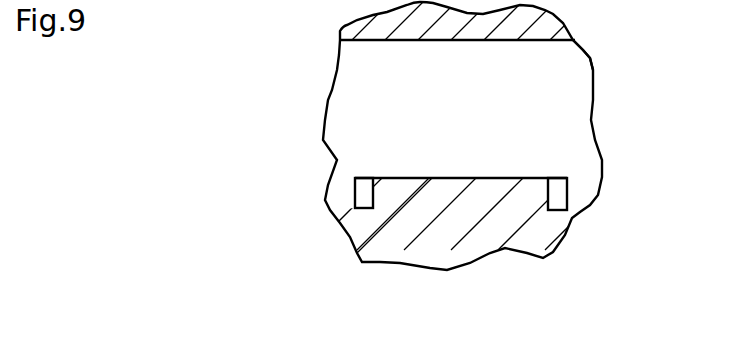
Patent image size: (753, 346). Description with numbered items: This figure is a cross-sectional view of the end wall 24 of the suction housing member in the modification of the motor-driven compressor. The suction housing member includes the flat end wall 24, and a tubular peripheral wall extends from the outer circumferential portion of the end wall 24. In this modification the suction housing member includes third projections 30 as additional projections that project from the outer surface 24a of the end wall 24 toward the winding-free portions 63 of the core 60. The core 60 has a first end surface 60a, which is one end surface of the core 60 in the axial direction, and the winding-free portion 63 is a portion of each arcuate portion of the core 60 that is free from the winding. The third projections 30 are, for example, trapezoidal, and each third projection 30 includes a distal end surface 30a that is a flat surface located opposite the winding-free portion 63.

The core 60 is at (350, 32).
The winding-free portion 63 is at (542, 22).
The first end surface 60a is at (532, 41).
The end wall 24 is at (355, 234).
The outer surface 24a is at (333, 208).
The third projection 30 is at (568, 193).
The distal end surface 30a is at (440, 178).